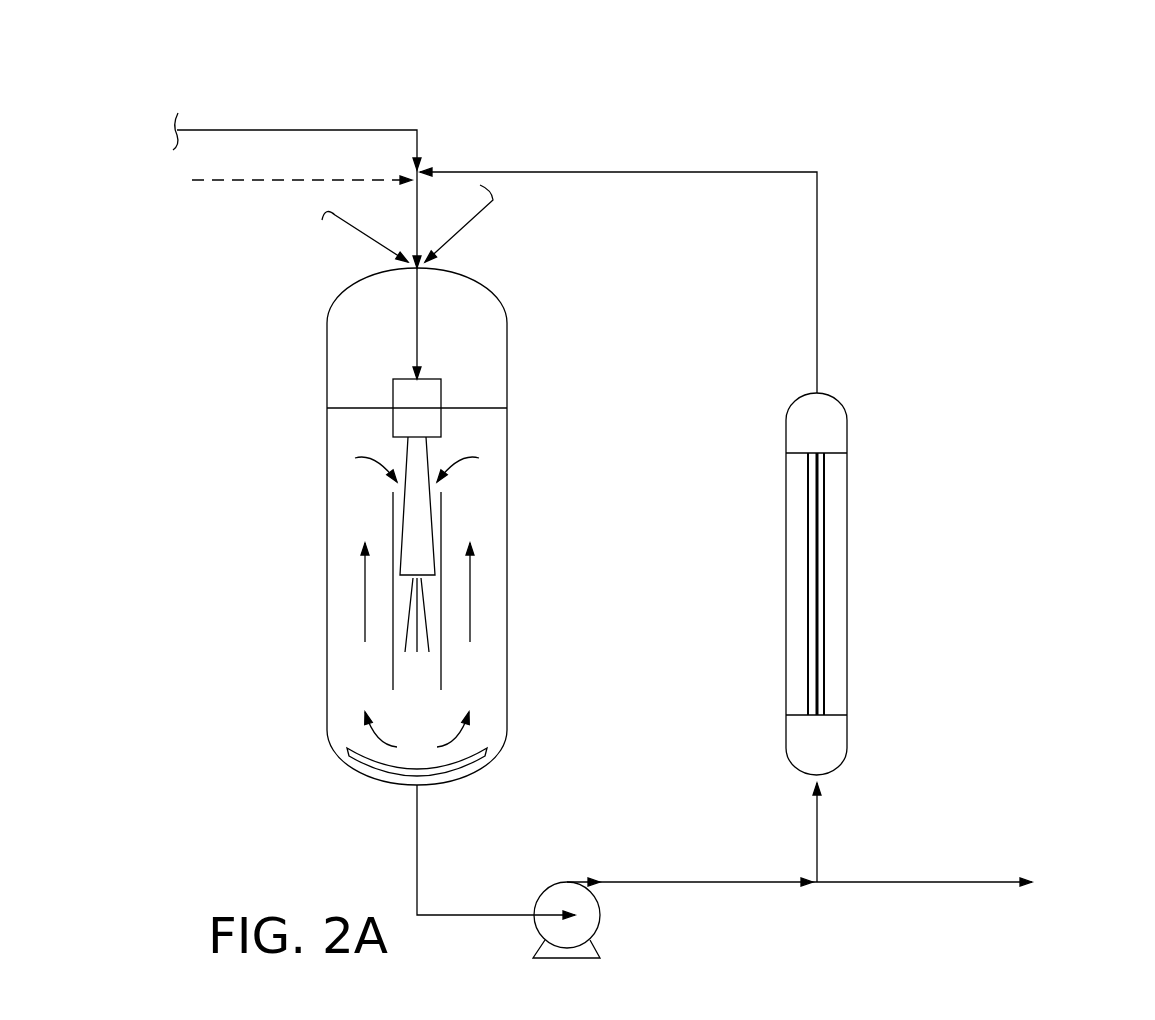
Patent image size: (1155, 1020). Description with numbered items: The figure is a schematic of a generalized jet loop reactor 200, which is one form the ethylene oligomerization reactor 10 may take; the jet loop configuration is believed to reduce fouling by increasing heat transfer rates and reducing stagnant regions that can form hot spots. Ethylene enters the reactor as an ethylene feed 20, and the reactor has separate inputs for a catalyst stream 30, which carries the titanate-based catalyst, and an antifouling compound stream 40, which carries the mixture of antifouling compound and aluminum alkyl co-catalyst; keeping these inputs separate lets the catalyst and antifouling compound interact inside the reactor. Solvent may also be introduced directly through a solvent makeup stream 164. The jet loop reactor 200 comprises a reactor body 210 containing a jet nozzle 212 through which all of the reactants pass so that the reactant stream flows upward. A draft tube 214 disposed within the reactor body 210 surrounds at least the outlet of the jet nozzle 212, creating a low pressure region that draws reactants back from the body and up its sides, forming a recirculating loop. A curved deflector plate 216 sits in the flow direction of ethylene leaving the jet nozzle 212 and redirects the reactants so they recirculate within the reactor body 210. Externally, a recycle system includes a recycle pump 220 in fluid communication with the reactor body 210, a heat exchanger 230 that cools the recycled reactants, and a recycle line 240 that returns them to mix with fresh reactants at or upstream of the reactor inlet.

The reactor 10 is at (1037, 143).
The ethylene feed 20 is at (297, 130).
The catalyst stream 30 is at (497, 202).
The antifouling compound stream 40 is at (366, 237).
The solvent makeup stream 164 is at (257, 182).
The jet loop reactor 200 is at (893, 120).
The reactor body 210 is at (507, 432).
The jet nozzle 212 is at (393, 423).
The draft tube 214 is at (441, 655).
The deflector plate 216 is at (385, 772).
The recycle pump 220 is at (596, 945).
The heat exchanger 230 is at (847, 580).
The recycle line 240 is at (817, 297).